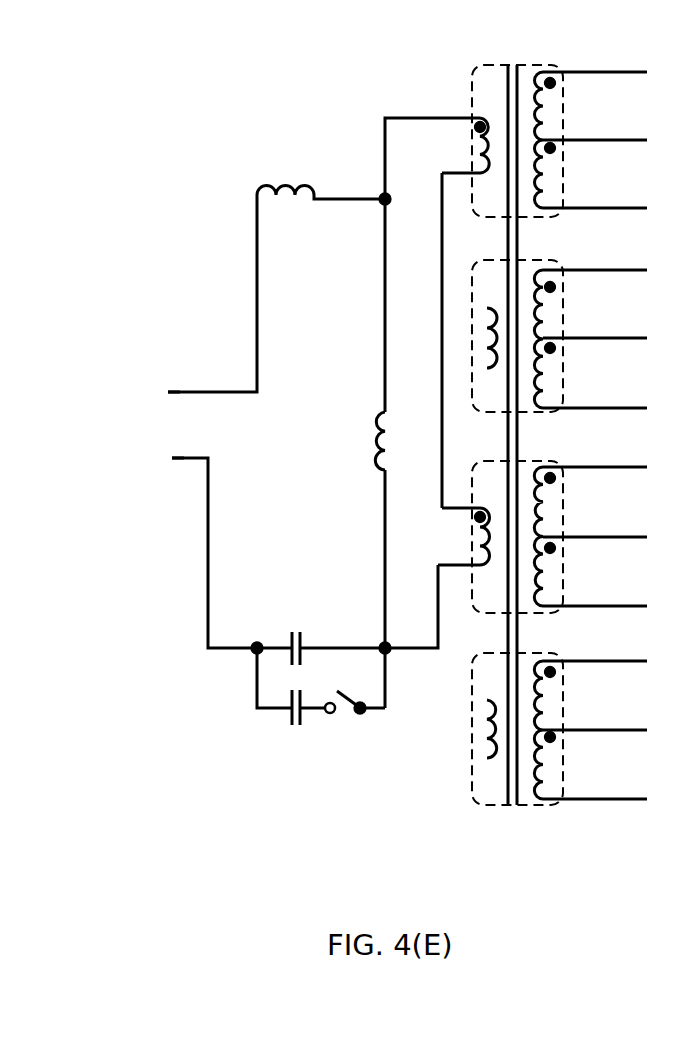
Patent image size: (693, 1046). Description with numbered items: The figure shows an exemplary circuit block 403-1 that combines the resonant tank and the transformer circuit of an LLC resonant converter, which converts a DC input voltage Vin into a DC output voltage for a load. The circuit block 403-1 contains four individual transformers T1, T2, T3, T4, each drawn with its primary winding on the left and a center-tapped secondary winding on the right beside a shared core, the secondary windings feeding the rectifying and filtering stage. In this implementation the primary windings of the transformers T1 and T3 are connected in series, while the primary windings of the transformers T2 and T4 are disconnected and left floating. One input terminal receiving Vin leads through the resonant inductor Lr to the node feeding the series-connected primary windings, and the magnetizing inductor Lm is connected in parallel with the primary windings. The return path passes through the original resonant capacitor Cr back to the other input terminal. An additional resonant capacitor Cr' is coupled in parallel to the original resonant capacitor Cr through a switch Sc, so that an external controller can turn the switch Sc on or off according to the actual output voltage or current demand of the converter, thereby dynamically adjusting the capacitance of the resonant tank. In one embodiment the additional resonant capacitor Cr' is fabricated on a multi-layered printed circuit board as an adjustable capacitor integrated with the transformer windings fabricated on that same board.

The circuit block 403-1 is at (276, 88).
The DC input voltage Vin is at (142, 425).
The resonant inductor Lr is at (321, 169).
The magnetizing inductor Lm is at (350, 441).
The original resonant capacitor Cr is at (295, 619).
The additional resonant capacitor Cr' is at (291, 713).
The switch Sc is at (354, 683).
The transformer T1 is at (470, 93).
The transformer T2 is at (470, 305).
The transformer T3 is at (470, 480).
The transformer T4 is at (470, 715).